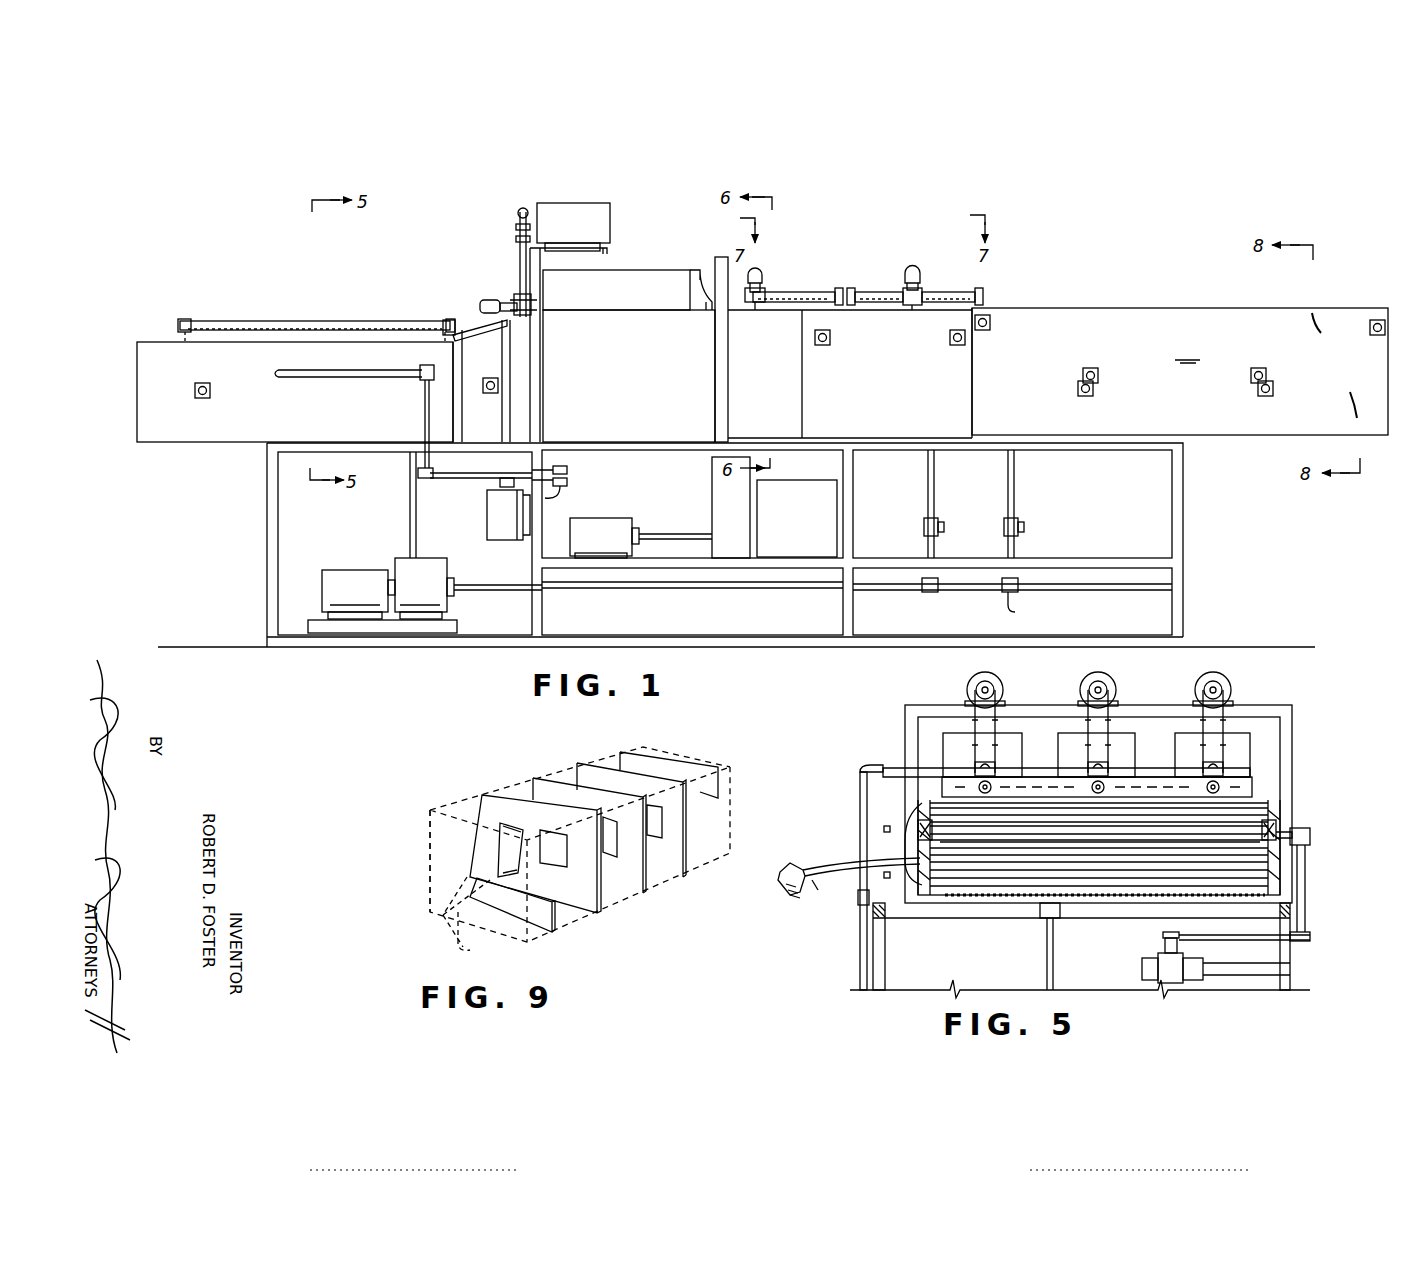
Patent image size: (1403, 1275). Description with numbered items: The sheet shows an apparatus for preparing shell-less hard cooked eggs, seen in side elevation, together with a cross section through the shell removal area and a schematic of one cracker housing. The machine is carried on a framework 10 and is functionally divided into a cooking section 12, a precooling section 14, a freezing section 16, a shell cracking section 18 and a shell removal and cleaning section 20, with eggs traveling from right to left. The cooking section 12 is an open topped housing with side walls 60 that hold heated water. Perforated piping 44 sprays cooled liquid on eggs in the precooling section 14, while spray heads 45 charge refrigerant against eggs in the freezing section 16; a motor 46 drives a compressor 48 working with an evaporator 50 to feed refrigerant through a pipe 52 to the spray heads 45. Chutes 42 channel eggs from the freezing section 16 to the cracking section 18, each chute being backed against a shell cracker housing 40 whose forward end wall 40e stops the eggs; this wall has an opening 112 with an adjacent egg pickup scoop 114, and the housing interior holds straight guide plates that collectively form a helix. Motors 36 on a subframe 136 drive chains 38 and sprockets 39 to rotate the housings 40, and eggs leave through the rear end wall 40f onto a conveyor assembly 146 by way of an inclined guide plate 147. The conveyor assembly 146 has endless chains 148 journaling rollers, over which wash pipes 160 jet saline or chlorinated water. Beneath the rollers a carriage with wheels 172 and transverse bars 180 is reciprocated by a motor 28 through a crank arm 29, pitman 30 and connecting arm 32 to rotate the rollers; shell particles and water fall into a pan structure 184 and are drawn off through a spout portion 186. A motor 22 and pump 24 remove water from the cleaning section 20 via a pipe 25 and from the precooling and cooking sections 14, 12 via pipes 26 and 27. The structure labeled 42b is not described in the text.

In FIG. 1, the framework 10 is at (262, 528).
In FIG. 5, the framework 10 is at (1295, 963).
In FIG. 1, the cooking section 12 is at (1156, 306).
In FIG. 1, the precooling section 14 is at (924, 288).
In FIG. 1, the freezing section 16 is at (864, 265).
In FIG. 1, the shell cracking section 18 is at (635, 256).
In FIG. 1, the shell removal and cleaning section 20 is at (287, 316).
In FIG. 1, the motor 22 is at (345, 580).
In FIG. 1, the pump 24 is at (430, 584).
In FIG. 1, the pipe 25 is at (409, 507).
In FIG. 5, the pipe 25 is at (1045, 953).
In FIG. 1, the pipe 26 is at (926, 490).
In FIG. 1, the pipe 27 is at (1006, 490).
In FIG. 1, the motor 28 is at (515, 523).
In FIG. 5, the motor 28 is at (1162, 960).
In FIG. 1, the crank arm 29 is at (565, 500).
In FIG. 1, the pitman 30 is at (498, 476).
In FIG. 5, the pitman 30 is at (1240, 948).
In FIG. 1, the connecting arm 32 is at (424, 402).
In FIG. 5, the connecting arm 32 is at (1306, 882).
In FIG. 1, the motor 36 is at (585, 231).
In FIG. 5, the motor 36 is at (985, 672).
In FIG. 1, the chain 38 is at (519, 249).
In FIG. 5, the chain 38 is at (996, 720).
In FIG. 5, the sprocket 39 is at (988, 765).
In FIG. 1, the shell cracker housing 40 is at (660, 303).
In FIG. 9, the shell cracker housing 40 is at (584, 847).
In FIG. 9, the forward end wall 40e is at (440, 832).
In FIG. 9, the rear end wall 40f is at (718, 815).
In FIG. 5, the rear end wall 40f is at (948, 745).
In FIG. 1, the chute 42 is at (705, 266).
In FIG. 1, the bracket flange 42b is at (708, 302).
In FIG. 1, the perforated piping 44 is at (890, 290).
In FIG. 1, the spray head 45 is at (803, 294).
In FIG. 1, the motor 46 is at (612, 545).
In FIG. 1, the compressor 48 is at (810, 513).
In FIG. 1, the evaporator 50 is at (742, 506).
In FIG. 1, the pipe 52 is at (760, 276).
In FIG. 1, the side wall 60 is at (1187, 352).
In FIG. 9, the opening 112 is at (463, 945).
In FIG. 9, the egg pickup scoop 114 is at (445, 917).
In FIG. 1, the subframe 136 is at (604, 258).
In FIG. 5, the conveyor assembly 146 is at (1252, 790).
In FIG. 1, the guide plate 147 is at (460, 330).
In FIG. 5, the endless chain 148 is at (925, 830).
In FIG. 1, the wash pipe 160 is at (364, 320).
In FIG. 5, the wheel 172 is at (918, 835).
In FIG. 5, the bar 180 is at (1025, 845).
In FIG. 5, the pan structure 184 is at (845, 895).
In FIG. 5, the spout portion 186 is at (795, 862).